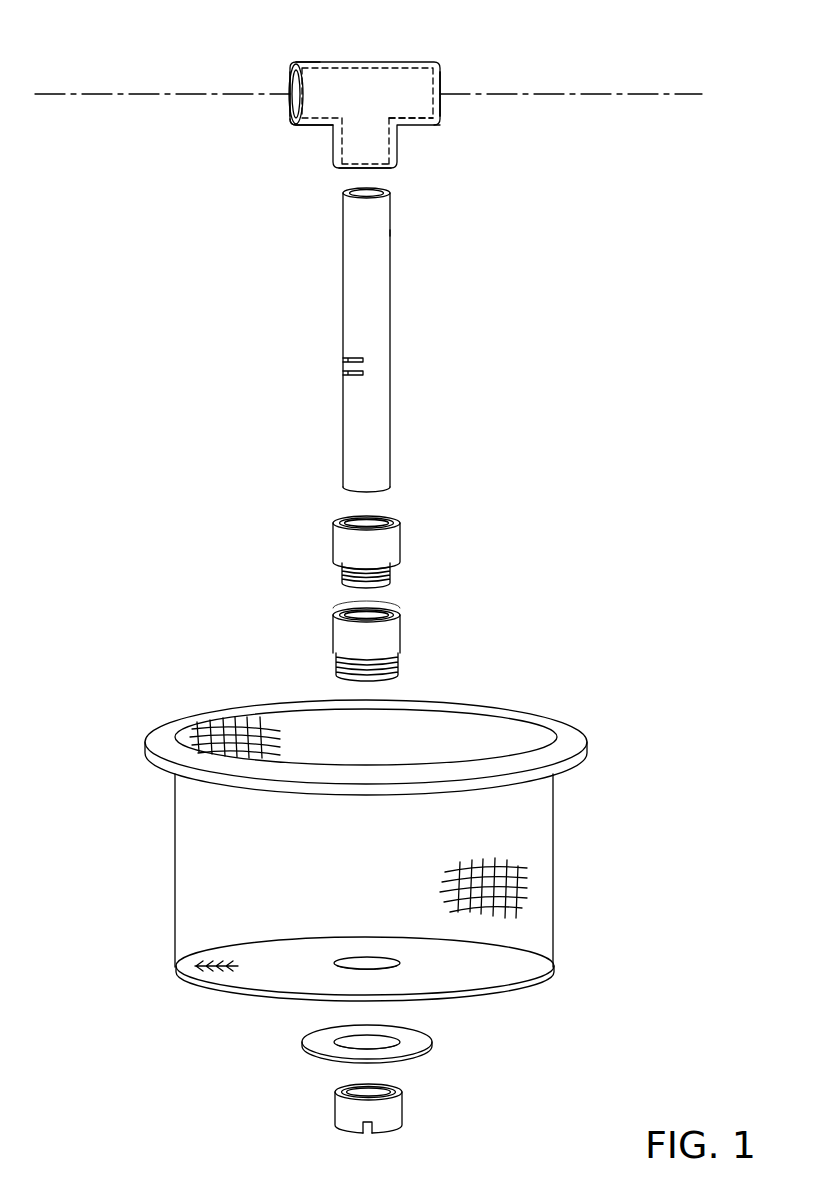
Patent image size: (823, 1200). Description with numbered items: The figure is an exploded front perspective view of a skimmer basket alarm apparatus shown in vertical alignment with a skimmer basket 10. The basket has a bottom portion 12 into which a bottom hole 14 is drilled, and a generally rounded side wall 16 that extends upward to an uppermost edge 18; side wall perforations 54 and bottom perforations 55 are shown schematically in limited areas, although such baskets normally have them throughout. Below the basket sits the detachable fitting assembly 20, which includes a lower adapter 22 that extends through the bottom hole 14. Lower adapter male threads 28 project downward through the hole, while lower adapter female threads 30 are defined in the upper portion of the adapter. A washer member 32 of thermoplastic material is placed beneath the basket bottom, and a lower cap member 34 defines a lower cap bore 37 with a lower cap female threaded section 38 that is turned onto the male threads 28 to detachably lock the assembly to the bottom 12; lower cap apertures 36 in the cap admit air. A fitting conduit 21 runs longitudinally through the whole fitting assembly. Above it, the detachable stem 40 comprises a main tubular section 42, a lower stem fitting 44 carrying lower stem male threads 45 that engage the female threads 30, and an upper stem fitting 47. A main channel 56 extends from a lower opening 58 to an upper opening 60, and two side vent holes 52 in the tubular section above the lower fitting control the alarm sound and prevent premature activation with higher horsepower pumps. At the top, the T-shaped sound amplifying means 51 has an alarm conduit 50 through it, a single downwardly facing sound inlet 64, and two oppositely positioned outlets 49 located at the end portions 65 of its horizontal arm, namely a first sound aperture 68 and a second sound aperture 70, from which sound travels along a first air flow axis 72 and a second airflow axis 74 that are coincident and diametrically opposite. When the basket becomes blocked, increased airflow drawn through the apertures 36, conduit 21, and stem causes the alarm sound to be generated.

The skimmer basket 10 is at (369, 857).
The bottom portion 12 is at (287, 974).
The bottom hole 14 is at (360, 958).
The side wall 16 is at (340, 877).
The uppermost edge 18 is at (573, 738).
The detachable fitting assembly 20 is at (352, 858).
The fitting conduit 21 is at (343, 612).
The lower adapter 22 is at (379, 649).
The lower adapter male threads 28 is at (387, 673).
The lower adapter female threads 30 is at (380, 612).
The washer member 32 is at (420, 1042).
The lower cap member 34 is at (347, 1115).
The lower cap apertures 36 is at (368, 1130).
The lower cap bore 37 is at (357, 1092).
The lower cap female threaded section 38 is at (380, 1092).
The detachable stem 40 is at (377, 336).
The main tubular section 42 is at (390, 233).
The lower stem fitting 44 is at (361, 555).
The lower stem male threads 45 is at (358, 582).
The upper stem fitting 47 is at (362, 63).
The outlets 49 is at (290, 98).
The alarm conduit 50 is at (413, 114).
The sound amplifying means 51 is at (297, 63).
The side vent holes 52 is at (343, 372).
The side wall perforations 54 is at (215, 732).
The bottom perforations 55 is at (207, 963).
The main channel 56 is at (382, 190).
The lower opening 58 is at (368, 490).
The upper opening 60 is at (345, 191).
The sound inlet 64 is at (362, 170).
The tee end portions 65 is at (290, 75).
The first sound aperture 68 is at (293, 113).
The second sound aperture 70 is at (440, 112).
The first air flow axis 72 is at (72, 94).
The second airflow axis 74 is at (648, 95).